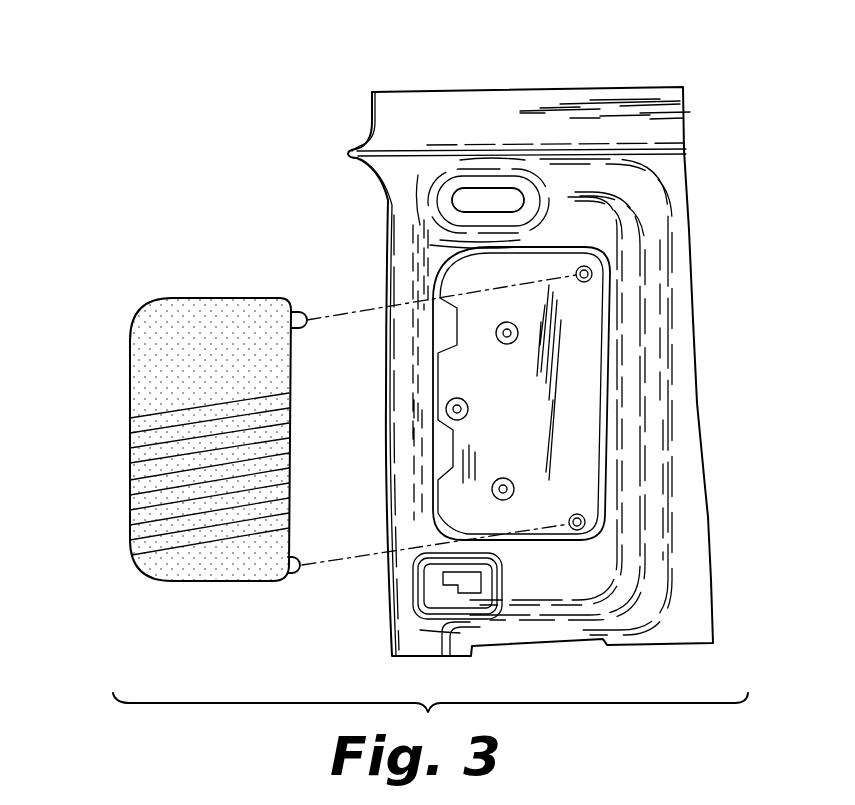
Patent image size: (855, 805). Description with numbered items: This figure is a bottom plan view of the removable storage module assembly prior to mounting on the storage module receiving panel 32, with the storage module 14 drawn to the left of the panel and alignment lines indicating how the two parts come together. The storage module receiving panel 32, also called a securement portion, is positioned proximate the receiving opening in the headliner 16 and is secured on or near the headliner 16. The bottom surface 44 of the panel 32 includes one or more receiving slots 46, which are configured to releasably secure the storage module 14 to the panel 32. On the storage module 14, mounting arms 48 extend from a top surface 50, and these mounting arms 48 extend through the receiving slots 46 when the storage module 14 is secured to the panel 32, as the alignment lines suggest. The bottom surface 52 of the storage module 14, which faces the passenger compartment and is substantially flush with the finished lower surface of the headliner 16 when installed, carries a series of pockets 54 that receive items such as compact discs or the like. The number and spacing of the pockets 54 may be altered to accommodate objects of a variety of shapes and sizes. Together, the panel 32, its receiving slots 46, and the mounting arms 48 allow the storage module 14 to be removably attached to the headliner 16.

The headliner 16 is at (580, 83).
The storage module 14 is at (130, 365).
The bottom surface 52 is at (198, 335).
The mounting arms 48 is at (305, 313).
The top surface 50 is at (290, 424).
The pockets 54 is at (143, 478).
The receiving slots 46 is at (593, 274).
The storage module receiving panel 32 is at (568, 357).
The bottom surface 44 is at (586, 455).